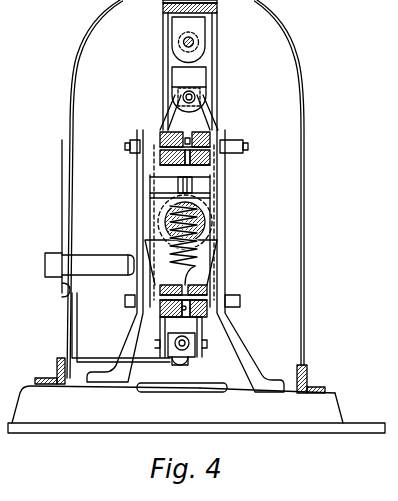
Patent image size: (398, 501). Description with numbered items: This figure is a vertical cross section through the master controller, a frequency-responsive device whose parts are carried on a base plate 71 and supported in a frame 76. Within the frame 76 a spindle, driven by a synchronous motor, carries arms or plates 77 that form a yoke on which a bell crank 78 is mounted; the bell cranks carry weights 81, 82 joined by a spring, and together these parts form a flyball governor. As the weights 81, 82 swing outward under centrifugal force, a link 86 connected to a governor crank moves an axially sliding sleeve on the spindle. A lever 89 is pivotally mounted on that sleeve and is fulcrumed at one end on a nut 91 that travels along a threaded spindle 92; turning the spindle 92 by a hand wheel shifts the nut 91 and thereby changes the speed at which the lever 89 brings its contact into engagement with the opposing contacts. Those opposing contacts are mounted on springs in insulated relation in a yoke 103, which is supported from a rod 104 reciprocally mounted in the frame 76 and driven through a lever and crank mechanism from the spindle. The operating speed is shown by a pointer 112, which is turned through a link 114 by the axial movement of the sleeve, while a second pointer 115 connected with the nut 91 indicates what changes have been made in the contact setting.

The base plate 71 is at (338, 396).
The frame 76 is at (165, 6).
The arms or plates 77 is at (146, 200).
The bell crank 78 is at (158, 170).
The weight 81 is at (213, 132).
The weight 82 is at (160, 318).
The link 86 is at (192, 182).
The lever 89 is at (165, 118).
The nut 91 is at (190, 361).
The threaded spindle 92 is at (195, 343).
The yoke 103 is at (172, 72).
The rod 104 is at (199, 42).
The pointer 112 is at (62, 169).
The link 114 is at (132, 243).
The second pointer 115 is at (60, 290).